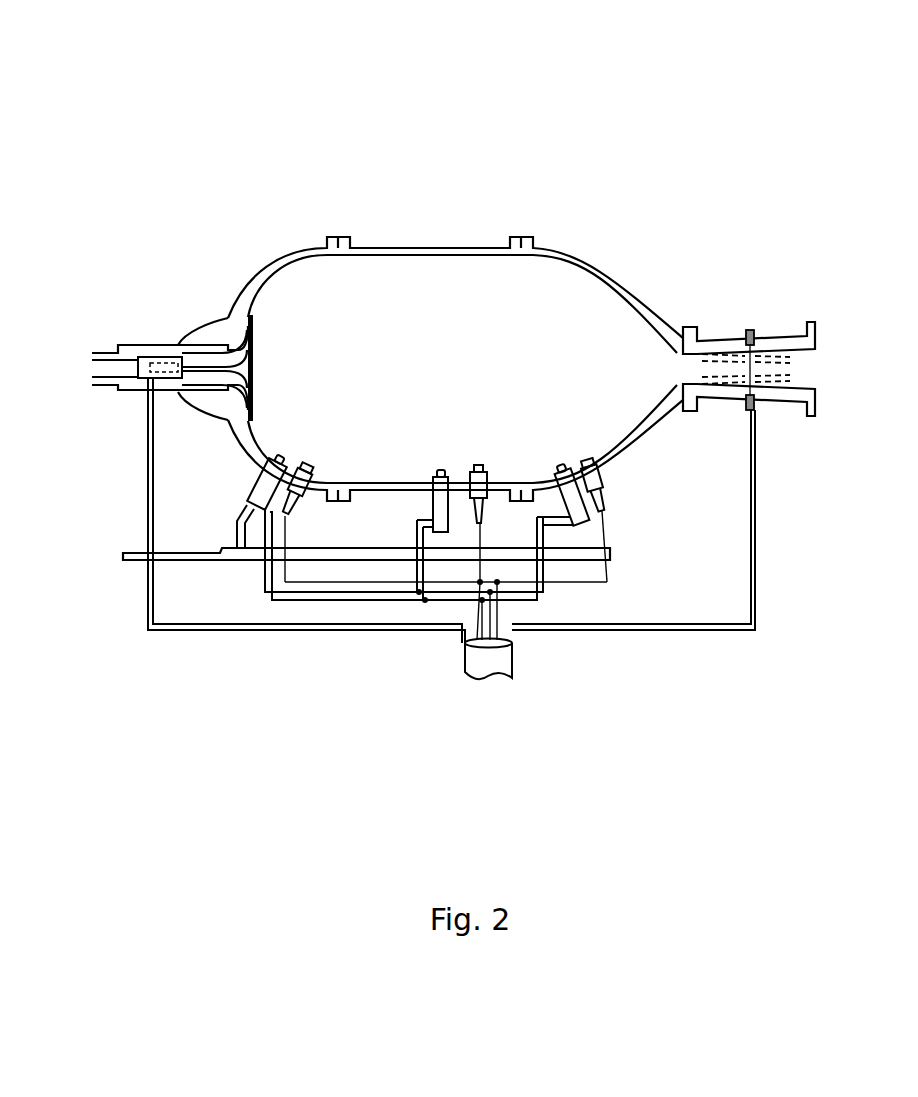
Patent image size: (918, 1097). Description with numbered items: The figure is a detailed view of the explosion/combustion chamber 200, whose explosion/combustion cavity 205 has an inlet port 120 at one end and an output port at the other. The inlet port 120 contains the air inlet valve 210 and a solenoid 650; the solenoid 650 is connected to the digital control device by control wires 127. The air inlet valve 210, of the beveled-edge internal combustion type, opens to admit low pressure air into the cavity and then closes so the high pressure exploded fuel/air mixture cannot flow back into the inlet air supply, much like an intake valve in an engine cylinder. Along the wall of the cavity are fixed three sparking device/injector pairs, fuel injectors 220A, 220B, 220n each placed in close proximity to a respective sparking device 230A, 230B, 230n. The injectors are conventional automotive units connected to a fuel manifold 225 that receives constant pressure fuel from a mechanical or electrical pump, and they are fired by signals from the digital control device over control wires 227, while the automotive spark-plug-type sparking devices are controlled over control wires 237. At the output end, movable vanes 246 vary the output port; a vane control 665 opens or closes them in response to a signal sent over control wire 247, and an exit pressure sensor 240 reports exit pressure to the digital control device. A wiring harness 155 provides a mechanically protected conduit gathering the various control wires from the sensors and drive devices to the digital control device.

The explosion/combustion chamber 200 is at (748, 58).
The explosion/combustion cavity 205 is at (438, 277).
The air inlet valve 210 is at (213, 360).
The inlet port 120 is at (125, 345).
The solenoid 650 is at (140, 367).
The control wires 127 is at (146, 425).
The fuel injector 220A is at (247, 498).
The fuel injector 220B is at (443, 527).
The fuel injector 220n is at (578, 523).
The sparking device 230A is at (292, 520).
The sparking device 230B is at (482, 523).
The sparking device 230n is at (605, 512).
The fuel manifold 225 is at (236, 557).
The control wires 227 is at (268, 590).
The control wires 237 is at (368, 588).
The wiring harness 155 is at (486, 668).
The exit pressure sensor 240 is at (713, 347).
The movable vanes 246 is at (777, 345).
The vane control 665 is at (757, 393).
The control wire 247 is at (755, 562).